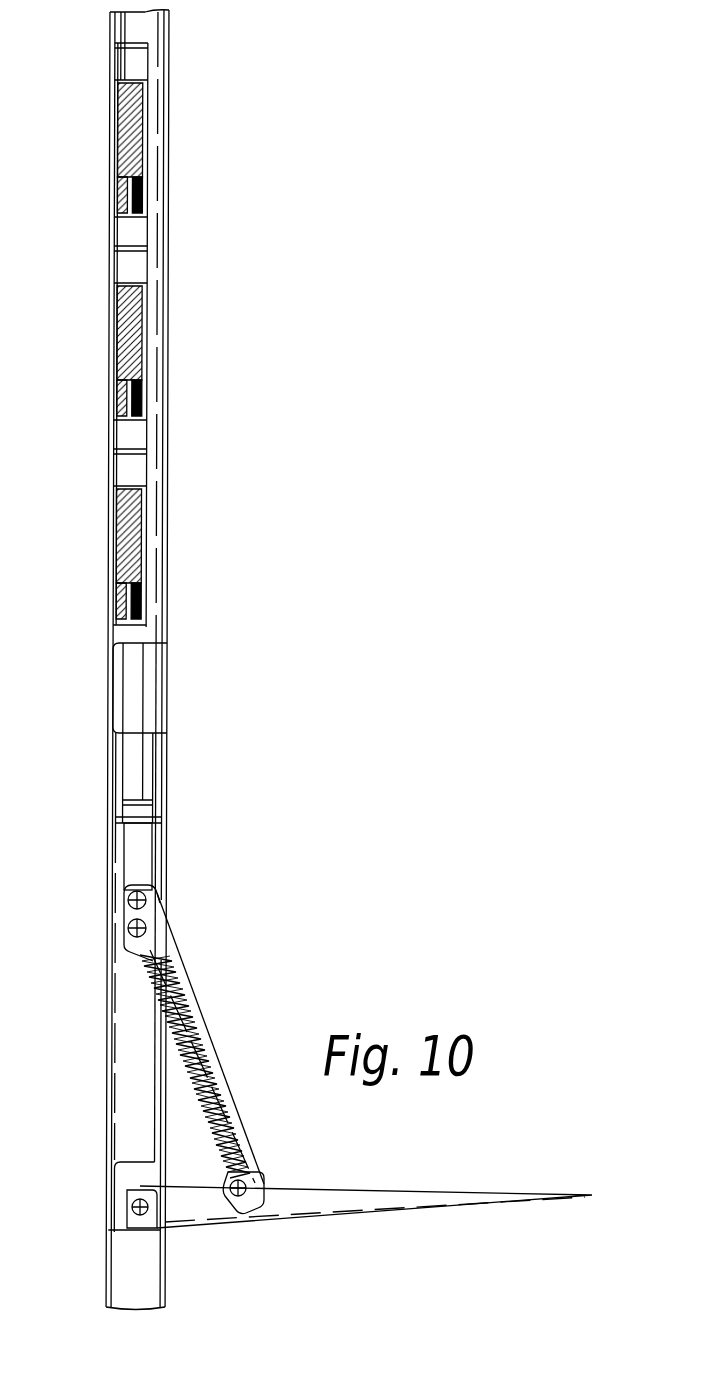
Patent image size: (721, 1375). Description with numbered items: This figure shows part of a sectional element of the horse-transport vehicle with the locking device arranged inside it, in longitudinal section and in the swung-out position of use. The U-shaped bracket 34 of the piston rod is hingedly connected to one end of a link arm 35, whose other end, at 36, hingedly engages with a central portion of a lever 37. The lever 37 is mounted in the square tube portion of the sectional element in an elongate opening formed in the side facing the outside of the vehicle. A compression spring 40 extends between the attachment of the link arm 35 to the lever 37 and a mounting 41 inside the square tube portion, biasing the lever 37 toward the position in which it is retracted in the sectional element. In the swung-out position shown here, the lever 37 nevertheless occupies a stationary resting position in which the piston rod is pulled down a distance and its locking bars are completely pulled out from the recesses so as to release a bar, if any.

The U-shaped bracket 34 is at (146, 862).
The link arm 35 is at (200, 1000).
The hinged engagement of link arm with lever 36 is at (258, 1176).
The lever 37 is at (390, 1186).
The compression spring 40 is at (222, 1087).
The mounting 41 is at (127, 944).